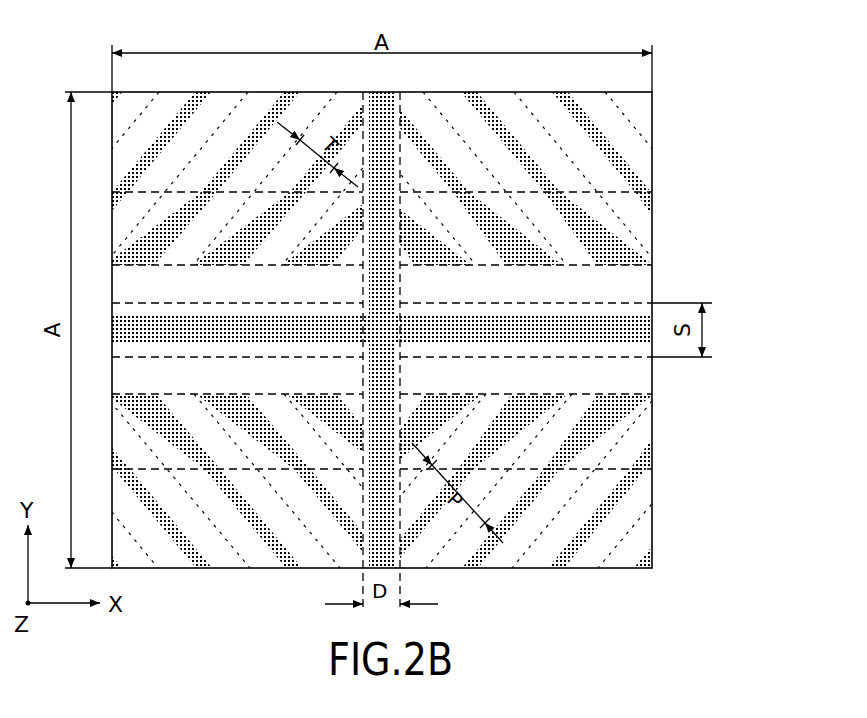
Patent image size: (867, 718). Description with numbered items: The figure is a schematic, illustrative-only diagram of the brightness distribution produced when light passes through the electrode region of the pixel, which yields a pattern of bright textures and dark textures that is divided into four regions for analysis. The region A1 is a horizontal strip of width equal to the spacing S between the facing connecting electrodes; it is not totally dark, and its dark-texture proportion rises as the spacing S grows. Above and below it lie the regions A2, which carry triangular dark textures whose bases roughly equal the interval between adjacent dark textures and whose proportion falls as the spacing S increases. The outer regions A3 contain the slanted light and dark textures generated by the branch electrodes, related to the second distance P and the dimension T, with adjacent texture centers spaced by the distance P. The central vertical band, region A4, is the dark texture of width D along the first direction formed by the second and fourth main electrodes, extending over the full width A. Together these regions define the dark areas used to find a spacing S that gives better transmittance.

The region A1 is at (382, 330).
The region A2 is at (255, 266).
The region A3 is at (232, 93).
The region A4 is at (379, 330).